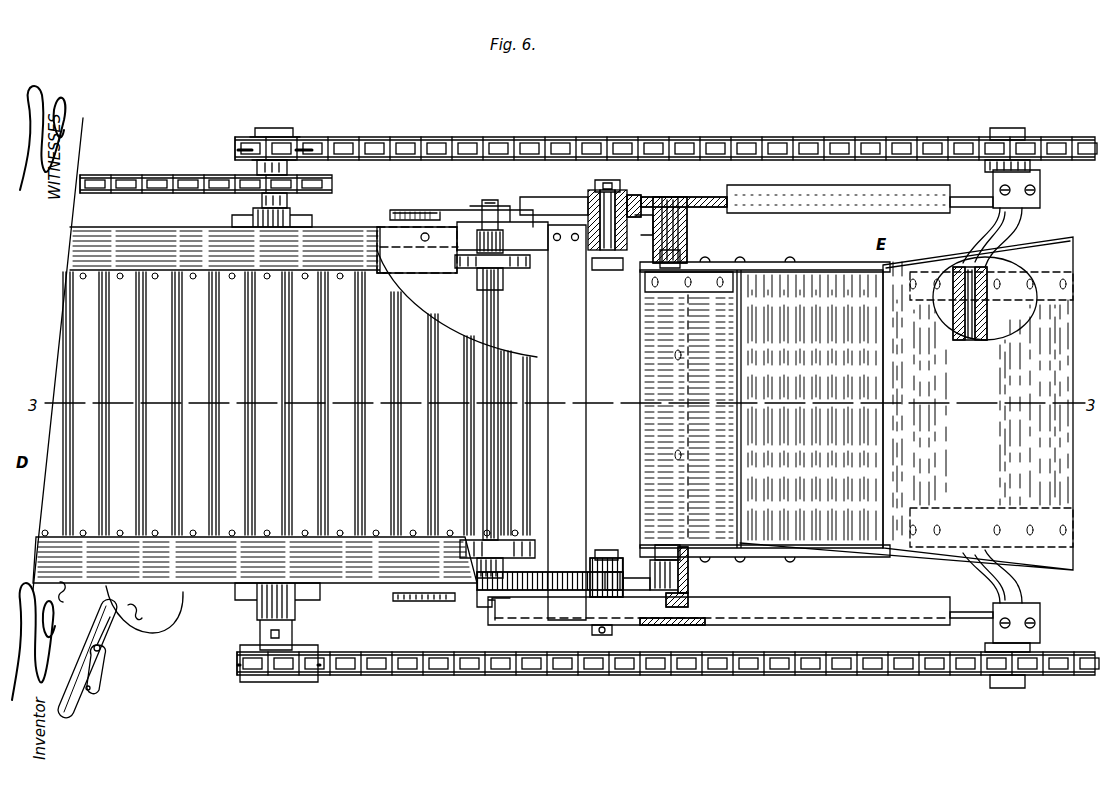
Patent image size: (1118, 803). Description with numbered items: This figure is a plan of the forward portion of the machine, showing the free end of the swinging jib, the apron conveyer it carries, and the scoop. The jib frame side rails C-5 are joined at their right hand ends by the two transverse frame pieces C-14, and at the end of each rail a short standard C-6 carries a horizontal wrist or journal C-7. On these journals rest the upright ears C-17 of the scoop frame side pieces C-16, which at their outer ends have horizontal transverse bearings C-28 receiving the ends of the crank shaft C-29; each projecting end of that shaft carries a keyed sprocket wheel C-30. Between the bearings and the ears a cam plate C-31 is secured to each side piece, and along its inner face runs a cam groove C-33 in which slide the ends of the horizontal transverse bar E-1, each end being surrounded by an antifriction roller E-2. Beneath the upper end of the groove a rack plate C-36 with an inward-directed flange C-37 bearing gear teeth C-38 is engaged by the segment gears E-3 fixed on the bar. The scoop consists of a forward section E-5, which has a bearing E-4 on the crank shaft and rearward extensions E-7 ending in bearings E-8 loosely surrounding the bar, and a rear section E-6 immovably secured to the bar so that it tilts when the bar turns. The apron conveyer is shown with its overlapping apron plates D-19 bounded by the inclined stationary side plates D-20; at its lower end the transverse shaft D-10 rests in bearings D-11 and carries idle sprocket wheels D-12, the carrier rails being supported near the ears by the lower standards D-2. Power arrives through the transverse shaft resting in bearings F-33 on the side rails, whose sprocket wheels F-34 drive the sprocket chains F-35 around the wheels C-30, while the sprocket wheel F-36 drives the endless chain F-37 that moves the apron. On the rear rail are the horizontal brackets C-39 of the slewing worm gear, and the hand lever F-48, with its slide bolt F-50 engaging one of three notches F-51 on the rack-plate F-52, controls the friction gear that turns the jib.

The inclined stationary side plates D-20 is at (145, 247).
The overlapping apron plates D-19 is at (82, 340).
The sprocket chain F-35 is at (396, 141).
The endless sprocket chain F-37 is at (172, 178).
The sprocket wheel F-34 is at (283, 133).
The sprocket wheel F-36 is at (295, 199).
The bearings F-33 is at (255, 217).
The bearings D-11 is at (480, 211).
The frame side rail C-5 is at (535, 234).
The standard D-2 is at (490, 229).
The sprocket wheel D-12 is at (480, 264).
The transverse horizontal shaft D-10 is at (495, 313).
The transverse frame pieces C-14 is at (574, 352).
The short standard C-6 is at (607, 251).
The wrist or journal C-7 is at (597, 246).
The upright ears C-17 is at (629, 200).
The scoop frame side pieces C-16 is at (568, 203).
The segment gears E-3 is at (690, 229).
The bearing E-8 is at (684, 256).
The antifriction roller E-2 is at (690, 200).
The rearward extension E-7 is at (765, 258).
The forward section of scoop E-5 is at (935, 581).
The rear section of scoop E-6 is at (640, 441).
The bearing E-4 is at (976, 305).
The cam plate C-31 is at (822, 201).
The horizontal transverse bearing C-28 is at (1041, 196).
The crank shaft C-29 is at (1015, 230).
The sprocket wheel C-30 is at (1030, 113).
The inward-directed flange C-37 is at (480, 591).
The rack plate C-36 is at (476, 607).
The gear teeth C-38 is at (482, 592).
The horizontal brackets C-39 is at (612, 592).
The horizontal transverse bar E-1 is at (672, 610).
The cam groove C-33 is at (700, 626).
The hand lever F-48 is at (80, 720).
The slide bolt F-50 is at (112, 620).
The notches F-51 is at (65, 600).
The rack-plate F-52 is at (176, 620).